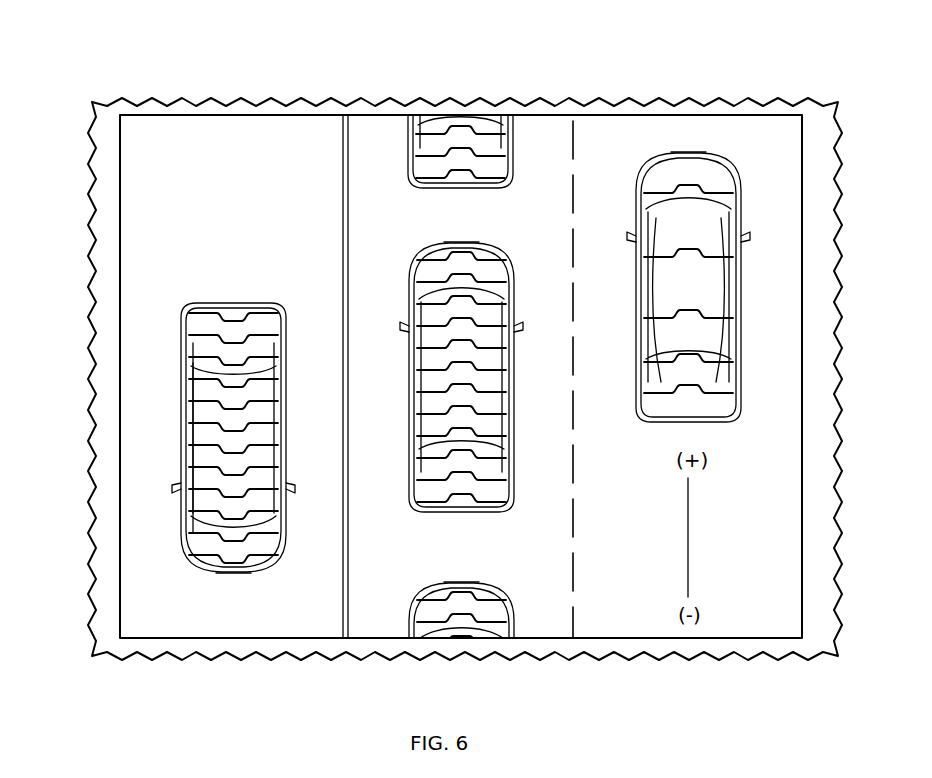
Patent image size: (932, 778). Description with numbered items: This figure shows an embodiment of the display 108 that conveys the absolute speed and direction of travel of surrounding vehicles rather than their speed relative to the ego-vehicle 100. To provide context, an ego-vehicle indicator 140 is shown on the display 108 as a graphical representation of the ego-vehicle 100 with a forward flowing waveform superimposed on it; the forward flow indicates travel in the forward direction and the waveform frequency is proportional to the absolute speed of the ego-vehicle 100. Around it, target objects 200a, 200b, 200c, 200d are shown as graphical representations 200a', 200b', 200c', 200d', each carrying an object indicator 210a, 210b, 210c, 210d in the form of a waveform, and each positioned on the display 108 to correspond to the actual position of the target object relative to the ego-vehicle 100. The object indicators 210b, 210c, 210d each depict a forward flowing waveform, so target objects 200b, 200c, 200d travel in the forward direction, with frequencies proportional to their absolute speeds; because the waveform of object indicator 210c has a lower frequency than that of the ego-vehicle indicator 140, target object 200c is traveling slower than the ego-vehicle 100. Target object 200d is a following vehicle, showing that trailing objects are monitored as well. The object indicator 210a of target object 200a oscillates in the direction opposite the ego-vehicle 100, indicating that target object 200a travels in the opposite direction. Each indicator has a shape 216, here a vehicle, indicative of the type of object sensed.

The ego-vehicle 100 is at (822, 95).
The display 108 is at (810, 167).
The ego-vehicle indicator 140 is at (522, 261).
The shape 216 is at (172, 413).
The target object 200a is at (233, 382).
The graphical representation 200a' is at (226, 411).
The object indicator 210a is at (187, 330).
The target object 200b is at (438, 133).
The graphical representation 200b' is at (391, 91).
The object indicator 210b is at (508, 165).
The target object 200c is at (675, 336).
The graphical representation 200c' is at (703, 315).
The object indicator 210c is at (741, 395).
The target object 200d is at (486, 643).
The graphical representation 200d' is at (446, 662).
The object indicator 210d is at (512, 627).